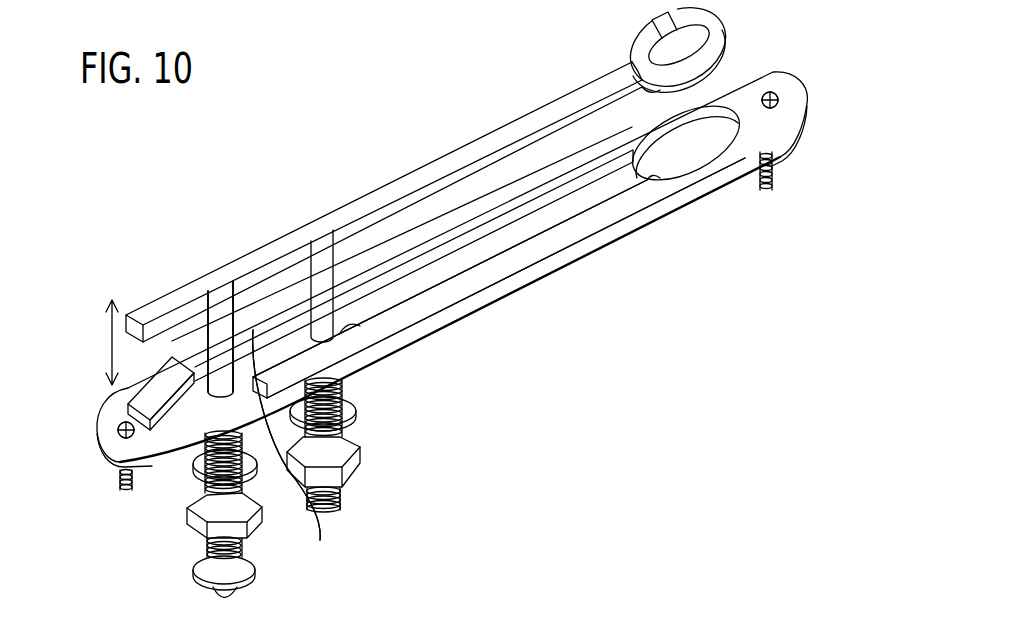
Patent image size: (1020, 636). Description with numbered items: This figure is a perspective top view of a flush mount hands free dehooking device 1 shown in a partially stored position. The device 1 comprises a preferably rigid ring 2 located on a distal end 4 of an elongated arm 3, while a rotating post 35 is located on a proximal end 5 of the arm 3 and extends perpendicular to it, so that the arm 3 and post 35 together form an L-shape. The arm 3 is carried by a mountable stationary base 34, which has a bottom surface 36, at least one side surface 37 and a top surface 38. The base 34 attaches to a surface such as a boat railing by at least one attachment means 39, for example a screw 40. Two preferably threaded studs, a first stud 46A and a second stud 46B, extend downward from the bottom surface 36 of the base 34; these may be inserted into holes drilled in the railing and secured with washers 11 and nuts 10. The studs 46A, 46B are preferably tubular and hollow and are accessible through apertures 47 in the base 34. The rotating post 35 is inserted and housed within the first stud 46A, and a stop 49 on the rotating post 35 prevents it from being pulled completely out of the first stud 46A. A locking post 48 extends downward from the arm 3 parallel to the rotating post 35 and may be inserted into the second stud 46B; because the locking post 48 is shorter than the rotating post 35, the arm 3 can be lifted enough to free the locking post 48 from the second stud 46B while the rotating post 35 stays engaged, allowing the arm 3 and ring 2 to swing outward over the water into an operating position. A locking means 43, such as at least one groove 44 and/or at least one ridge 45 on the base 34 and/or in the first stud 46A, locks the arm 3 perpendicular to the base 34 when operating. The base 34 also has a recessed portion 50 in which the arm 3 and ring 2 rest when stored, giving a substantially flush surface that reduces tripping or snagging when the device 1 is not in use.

The flush mount hands free dehooking device 1 is at (373, 101).
The ring 2 is at (655, 38).
The elongated arm 3 is at (387, 193).
The distal end 4 is at (628, 75).
The proximal end 5 is at (143, 317).
The nut 10 is at (250, 520).
The washer 11 is at (212, 493).
The mountable stationary base 34 is at (483, 275).
The rotating post 35 is at (222, 320).
The bottom surface 36 is at (520, 290).
The side surface 37 is at (657, 220).
The top surface 38 is at (456, 223).
The attachment means 39 is at (778, 97).
The screw 40 is at (448, 265).
The locking means 43 is at (264, 410).
The groove 44 is at (317, 441).
The ridge 45 is at (236, 402).
The first stud 46A is at (215, 470).
The second stud 46B is at (345, 395).
The aperture 47 is at (206, 366).
The locking post 48 is at (320, 267).
The stop 49 is at (213, 580).
The recessed portion 50 is at (606, 190).